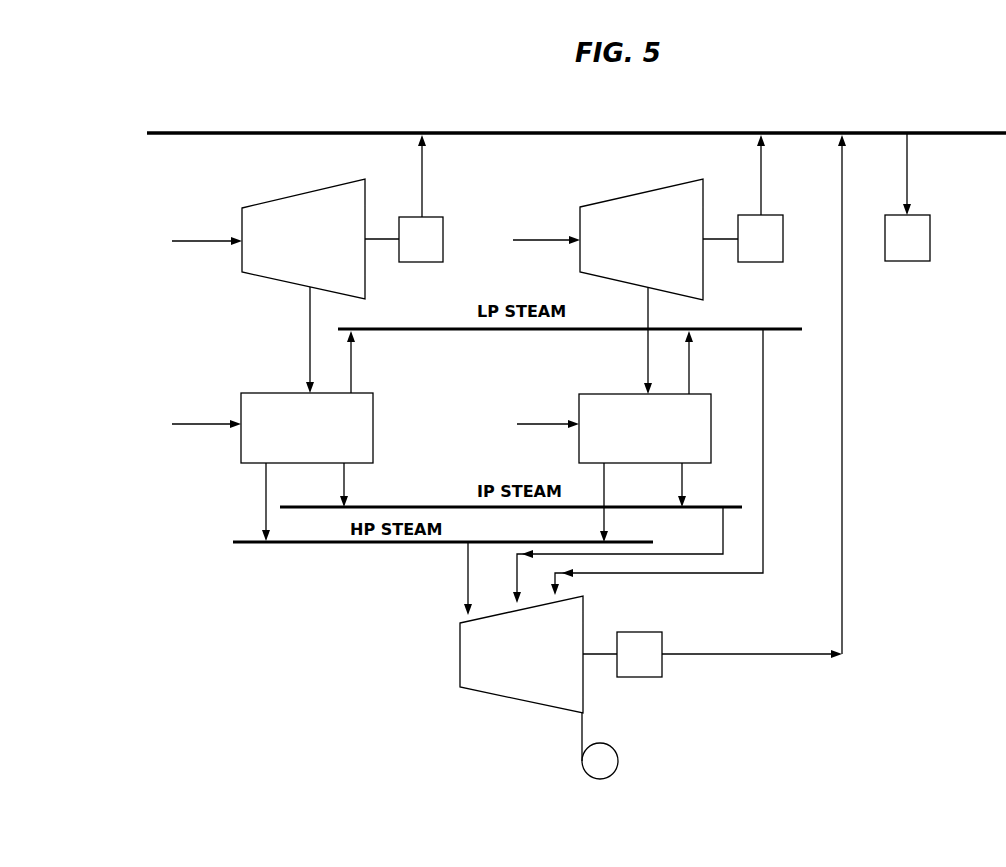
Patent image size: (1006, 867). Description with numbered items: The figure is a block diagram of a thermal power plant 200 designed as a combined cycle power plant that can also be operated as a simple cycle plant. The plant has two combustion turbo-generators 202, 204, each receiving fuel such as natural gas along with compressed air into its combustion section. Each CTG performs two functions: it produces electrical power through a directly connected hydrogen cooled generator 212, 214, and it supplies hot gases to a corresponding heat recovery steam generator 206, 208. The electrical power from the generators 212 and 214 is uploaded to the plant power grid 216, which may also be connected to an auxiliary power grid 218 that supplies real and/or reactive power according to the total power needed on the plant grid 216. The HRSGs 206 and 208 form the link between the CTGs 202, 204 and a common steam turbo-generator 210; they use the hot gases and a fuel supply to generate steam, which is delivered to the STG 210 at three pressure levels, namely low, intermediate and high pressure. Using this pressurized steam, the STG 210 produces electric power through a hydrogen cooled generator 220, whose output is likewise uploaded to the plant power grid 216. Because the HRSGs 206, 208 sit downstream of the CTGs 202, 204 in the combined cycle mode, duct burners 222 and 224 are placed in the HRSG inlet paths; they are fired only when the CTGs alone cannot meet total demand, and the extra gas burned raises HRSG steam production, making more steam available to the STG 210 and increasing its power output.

The thermal power plant 200 is at (258, 608).
The combustion turbo-generator 202 is at (268, 200).
The combustion turbo-generator 204 is at (623, 196).
The heat recovery steam generator 206 is at (373, 428).
The heat recovery steam generator 208 is at (711, 428).
The steam turbo-generator 210 is at (478, 690).
The hydrogen cooled generator 212 is at (443, 243).
The hydrogen cooled generator 214 is at (785, 226).
The plant power grid 216 is at (455, 131).
The auxiliary power grid 218 is at (917, 263).
The hydrogen cooled generator 220 is at (650, 679).
The duct burner 222 is at (226, 393).
The duct burner 224 is at (565, 395).